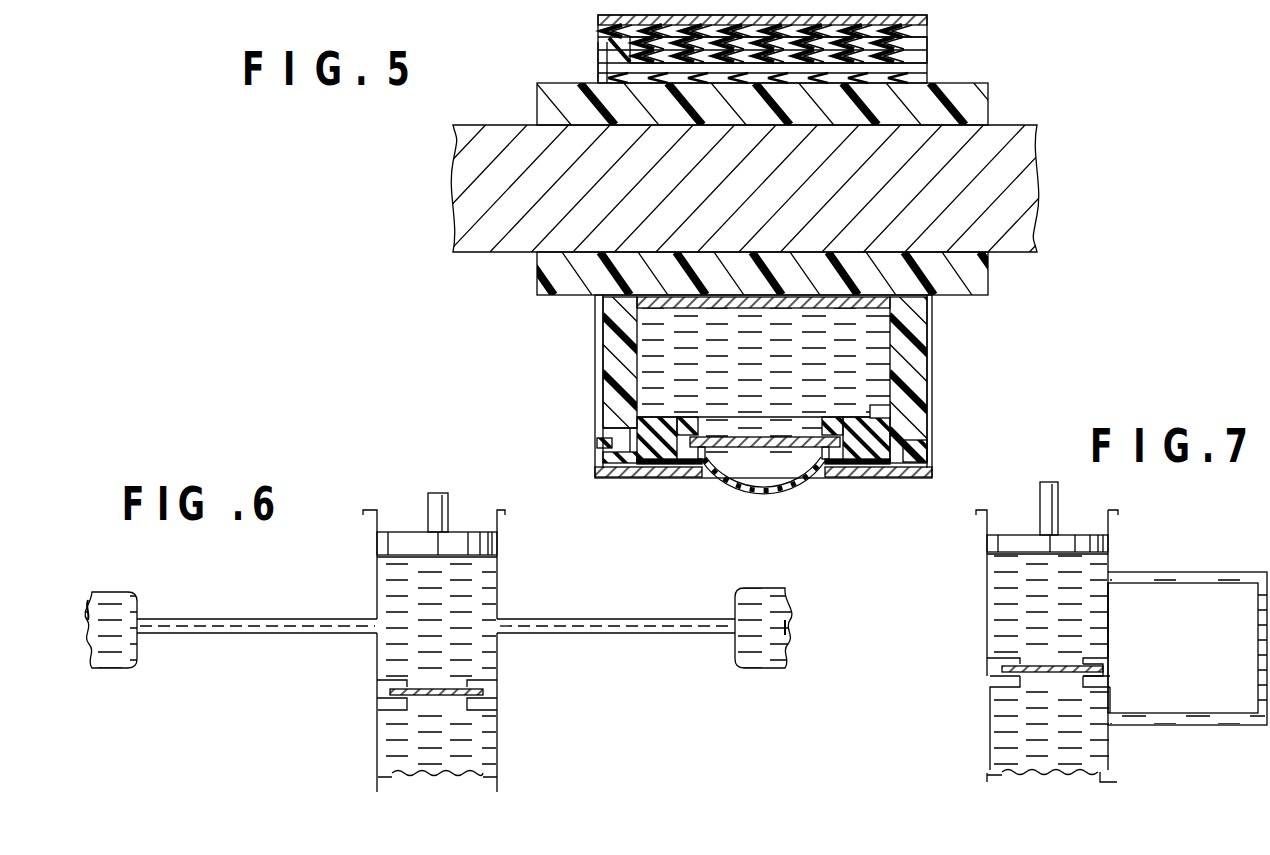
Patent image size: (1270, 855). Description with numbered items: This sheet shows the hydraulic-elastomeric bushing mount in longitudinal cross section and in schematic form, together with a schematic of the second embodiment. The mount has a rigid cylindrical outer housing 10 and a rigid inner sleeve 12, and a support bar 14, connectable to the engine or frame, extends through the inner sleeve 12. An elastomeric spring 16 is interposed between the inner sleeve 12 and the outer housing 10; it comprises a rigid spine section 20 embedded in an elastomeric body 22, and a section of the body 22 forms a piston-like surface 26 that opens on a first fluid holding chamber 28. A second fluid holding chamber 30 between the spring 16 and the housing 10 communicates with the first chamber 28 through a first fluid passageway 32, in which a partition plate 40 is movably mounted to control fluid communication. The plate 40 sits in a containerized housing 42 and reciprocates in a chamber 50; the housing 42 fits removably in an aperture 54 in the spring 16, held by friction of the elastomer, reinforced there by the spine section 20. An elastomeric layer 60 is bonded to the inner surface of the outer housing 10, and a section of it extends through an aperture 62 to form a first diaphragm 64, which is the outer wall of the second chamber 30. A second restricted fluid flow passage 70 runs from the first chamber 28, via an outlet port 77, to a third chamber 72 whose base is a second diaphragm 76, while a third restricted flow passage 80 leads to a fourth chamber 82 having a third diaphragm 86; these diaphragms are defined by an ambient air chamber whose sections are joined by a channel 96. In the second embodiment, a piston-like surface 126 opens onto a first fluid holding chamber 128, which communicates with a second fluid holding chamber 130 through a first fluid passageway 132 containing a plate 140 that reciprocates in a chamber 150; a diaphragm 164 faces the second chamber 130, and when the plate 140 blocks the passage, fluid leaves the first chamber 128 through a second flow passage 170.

In FIG. 5, the outer housing 10 is at (922, 19).
In FIG. 5, the inner sleeve 12 is at (970, 100).
In FIG. 5, the support bar 14 is at (1007, 180).
In FIG. 5, the elastomeric spring 16 is at (933, 365).
In FIG. 5, the rigid spine section 20 is at (922, 50).
In FIG. 5, the elastomeric body 22 is at (908, 335).
In FIG. 6, the piston-like surface 26 is at (413, 543).
In FIG. 5, the first fluid holding chamber 28 is at (657, 347).
In FIG. 6, the first fluid holding chamber 28 is at (468, 588).
In FIG. 5, the second fluid holding chamber 30 is at (793, 463).
In FIG. 6, the first fluid passageway 32 is at (460, 710).
In FIG. 5, the partition plate 40 is at (757, 437).
In FIG. 6, the partition plate 40 is at (430, 693).
In FIG. 5, the containerized housing 42 is at (660, 417).
In FIG. 6, the chamber 50 is at (487, 693).
In FIG. 5, the aperture 54 is at (640, 465).
In FIG. 5, the elastomeric layer 60 is at (598, 30).
In FIG. 5, the aperture 62 is at (704, 468).
In FIG. 5, the first diaphragm 64 is at (766, 492).
In FIG. 6, the first diaphragm 64 is at (440, 770).
In FIG. 6, the second restricted fluid flow passage 70 is at (617, 633).
In FIG. 6, the third chamber 72 is at (755, 648).
In FIG. 6, the second diaphragm 76 is at (790, 628).
In FIG. 5, the outlet port 77 is at (880, 412).
In FIG. 6, the third restricted flow passage 80 is at (248, 633).
In FIG. 6, the fourth chamber 82 is at (120, 647).
In FIG. 6, the third diaphragm 86 is at (87, 610).
In FIG. 5, the channel 96 is at (612, 66).
In FIG. 7, the piston-like surface 126 is at (1070, 542).
In FIG. 7, the first fluid holding chamber 128 is at (1010, 595).
In FIG. 7, the second fluid holding chamber 130 is at (1023, 713).
In FIG. 7, the first fluid passageway 132 is at (990, 682).
In FIG. 7, the plate 140 is at (1048, 668).
In FIG. 7, the chamber 150 is at (1103, 667).
In FIG. 7, the diaphragm 164 is at (1037, 770).
In FIG. 7, the second flow passage 170 is at (1163, 578).